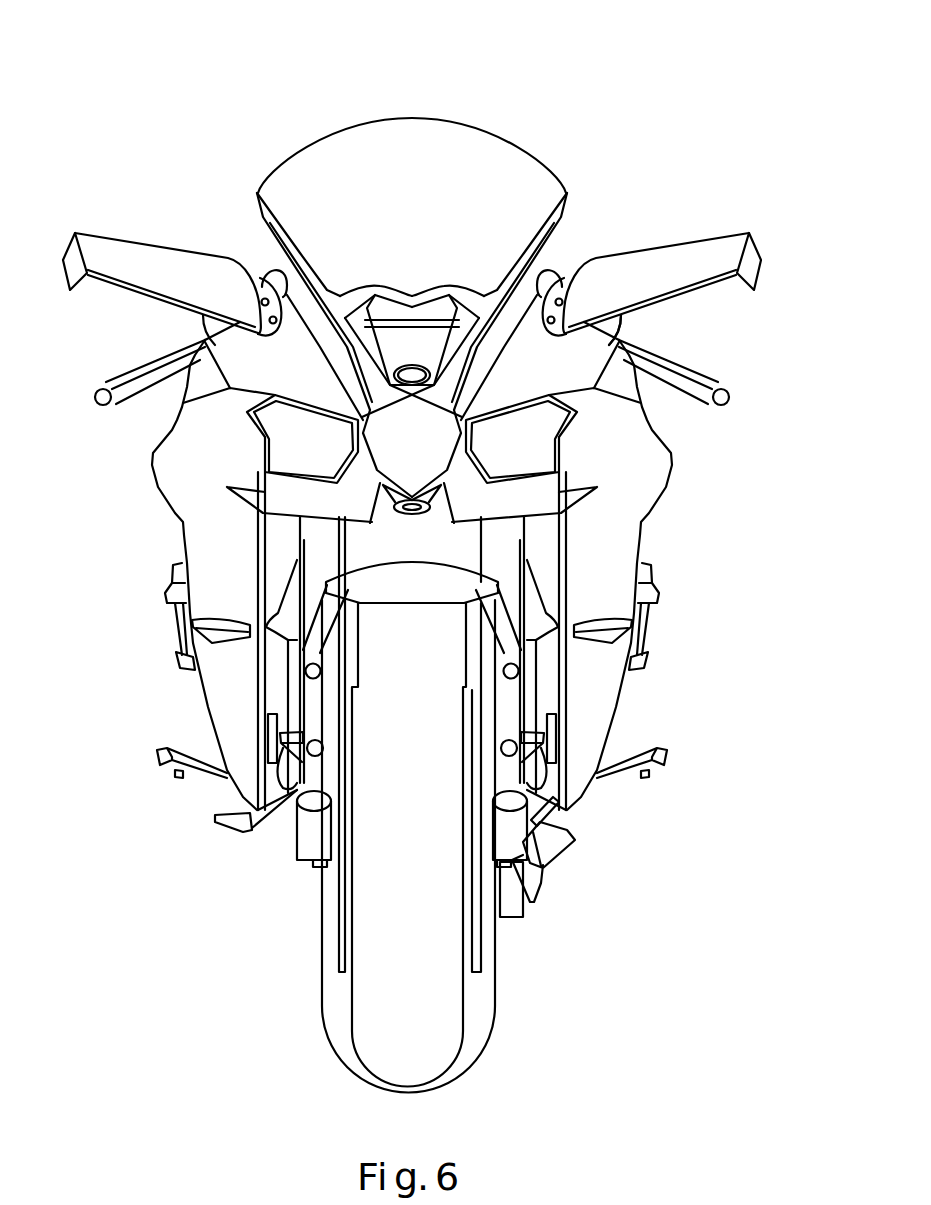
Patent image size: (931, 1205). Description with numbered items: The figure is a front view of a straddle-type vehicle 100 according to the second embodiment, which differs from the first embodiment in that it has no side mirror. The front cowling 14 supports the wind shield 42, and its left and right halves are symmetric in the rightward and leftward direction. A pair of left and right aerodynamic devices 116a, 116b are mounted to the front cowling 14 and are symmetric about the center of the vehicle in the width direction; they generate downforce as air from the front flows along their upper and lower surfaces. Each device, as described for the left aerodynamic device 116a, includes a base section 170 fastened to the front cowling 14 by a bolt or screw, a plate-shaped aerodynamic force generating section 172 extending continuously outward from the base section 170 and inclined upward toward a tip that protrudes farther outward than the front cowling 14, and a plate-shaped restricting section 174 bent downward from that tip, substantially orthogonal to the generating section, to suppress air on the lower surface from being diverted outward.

The straddle-type vehicle 100 is at (622, 80).
The wind shield 42 is at (440, 140).
The front cowling 14 is at (620, 341).
The aerodynamic device 116b is at (153, 233).
The aerodynamic device 116a is at (707, 222).
The base section 170 is at (568, 293).
The aerodynamic force generating section 172 is at (647, 247).
The restricting section 174 is at (757, 247).